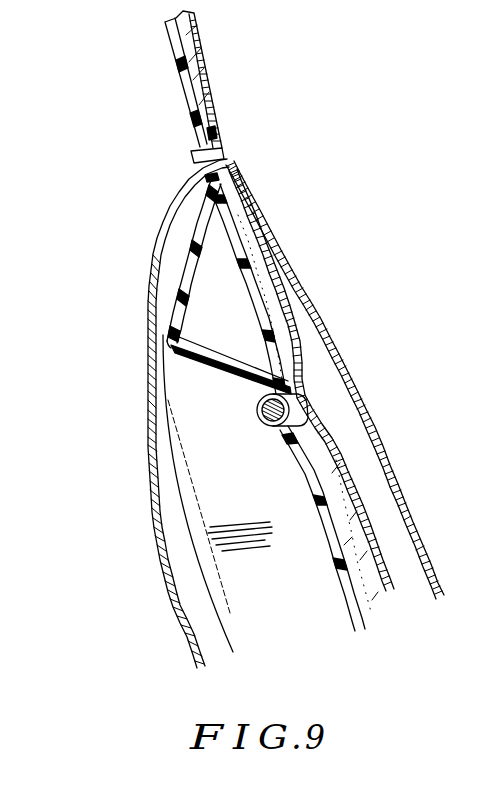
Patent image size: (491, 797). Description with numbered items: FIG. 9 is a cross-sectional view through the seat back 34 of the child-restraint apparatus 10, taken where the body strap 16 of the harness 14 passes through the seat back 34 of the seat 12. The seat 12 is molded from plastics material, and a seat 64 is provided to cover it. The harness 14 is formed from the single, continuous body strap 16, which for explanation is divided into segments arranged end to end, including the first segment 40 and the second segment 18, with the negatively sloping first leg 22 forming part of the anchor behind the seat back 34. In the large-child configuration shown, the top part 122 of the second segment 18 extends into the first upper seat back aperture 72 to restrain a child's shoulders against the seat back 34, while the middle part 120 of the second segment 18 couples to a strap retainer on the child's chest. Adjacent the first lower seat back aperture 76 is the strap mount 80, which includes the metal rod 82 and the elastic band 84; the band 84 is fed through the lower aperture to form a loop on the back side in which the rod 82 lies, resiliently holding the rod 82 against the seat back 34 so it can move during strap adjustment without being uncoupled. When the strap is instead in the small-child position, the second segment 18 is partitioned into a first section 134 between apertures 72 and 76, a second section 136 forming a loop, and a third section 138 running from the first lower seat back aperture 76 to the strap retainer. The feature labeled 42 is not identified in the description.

The child-restraint apparatus 10 is at (297, 104).
The seat 12 is at (190, 216).
The harness 14 is at (146, 257).
The body strap 16 is at (300, 256).
The second segment 18 is at (341, 333).
The negatively sloping first leg 22 is at (144, 438).
The seat back 34 is at (368, 487).
The first segment 40 is at (146, 338).
The edge 42 is at (145, 374).
The seat 64 is at (373, 597).
The first upper seat back aperture 72 is at (224, 156).
The first lower seat back aperture 76 is at (286, 437).
The strap mount 80 is at (257, 447).
The rod 82 is at (263, 424).
The band 84 is at (252, 401).
The middle part 120 is at (421, 520).
The top part 122 is at (276, 205).
The first section 134 is at (304, 285).
The second section 136 is at (353, 382).
The third section 138 is at (407, 500).